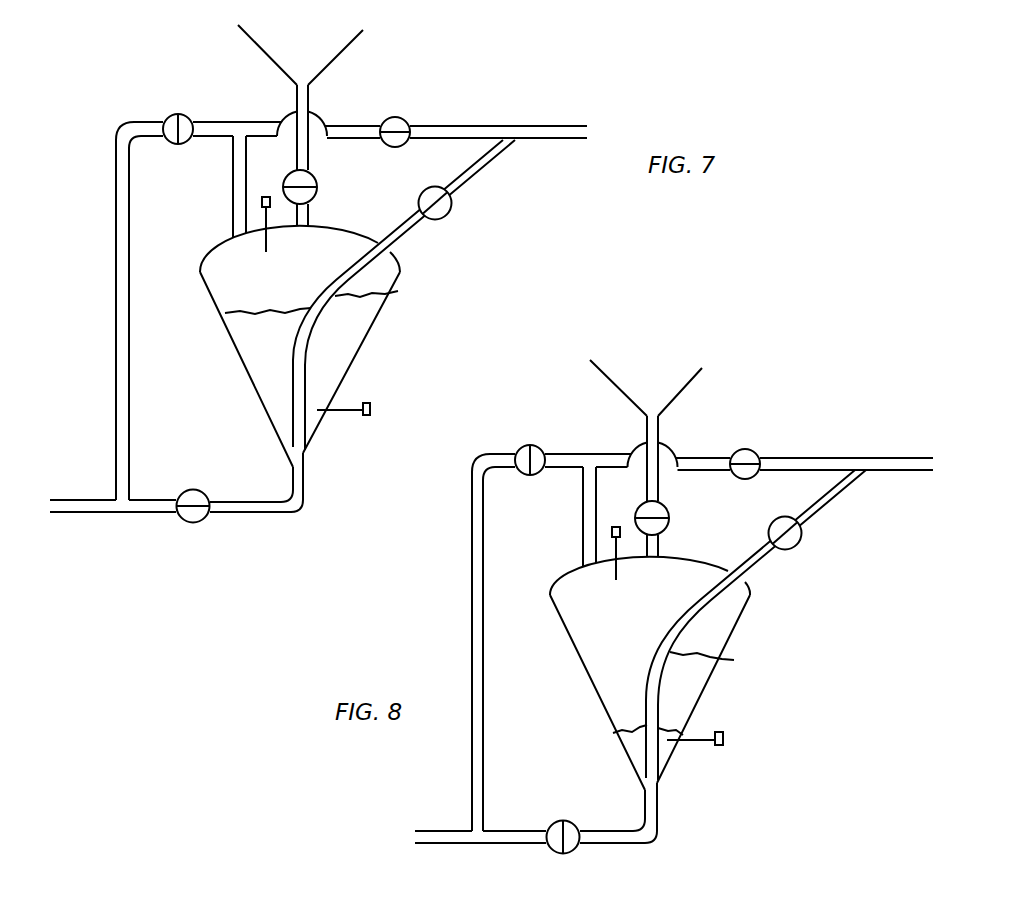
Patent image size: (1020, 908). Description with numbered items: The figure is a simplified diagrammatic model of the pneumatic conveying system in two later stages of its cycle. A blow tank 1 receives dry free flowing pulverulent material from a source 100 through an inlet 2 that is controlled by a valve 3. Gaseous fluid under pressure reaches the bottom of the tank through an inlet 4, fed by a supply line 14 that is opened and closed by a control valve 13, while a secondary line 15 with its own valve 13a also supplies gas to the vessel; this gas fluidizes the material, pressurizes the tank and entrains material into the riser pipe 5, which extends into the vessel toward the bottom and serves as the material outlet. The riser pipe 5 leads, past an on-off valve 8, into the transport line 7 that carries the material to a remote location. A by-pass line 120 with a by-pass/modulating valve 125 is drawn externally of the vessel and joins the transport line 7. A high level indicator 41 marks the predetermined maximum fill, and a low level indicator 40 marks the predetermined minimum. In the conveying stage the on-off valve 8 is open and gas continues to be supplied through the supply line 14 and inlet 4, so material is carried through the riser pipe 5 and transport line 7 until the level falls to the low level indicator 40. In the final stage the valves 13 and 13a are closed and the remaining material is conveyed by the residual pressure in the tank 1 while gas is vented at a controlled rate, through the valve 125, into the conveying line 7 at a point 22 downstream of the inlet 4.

In FIG. 7, the blow tank 1 is at (243, 364).
In FIG. 8, the blow tank 1 is at (588, 683).
In FIG. 7, the inlet 2 is at (309, 157).
In FIG. 8, the inlet 2 is at (660, 487).
In FIG. 7, the valve 3 is at (306, 203).
In FIG. 8, the valve 3 is at (661, 533).
In FIG. 7, the inlet for gaseous fluid 4 is at (305, 457).
In FIG. 8, the inlet for gaseous fluid 4 is at (660, 787).
In FIG. 7, the riser pipe 5 is at (376, 292).
In FIG. 8, the riser pipe 5 is at (711, 662).
In FIG. 7, the transport line 7 is at (575, 127).
In FIG. 8, the transport line 7 is at (905, 459).
In FIG. 7, the on-off valve 8 is at (452, 205).
In FIG. 8, the on-off valve 8 is at (798, 549).
In FIG. 7, the control valve 13 is at (194, 490).
In FIG. 8, the control valve 13 is at (558, 821).
In FIG. 7, the valve 13a is at (181, 114).
In FIG. 8, the valve 13a is at (534, 419).
In FIG. 7, the supply line 14 is at (258, 500).
In FIG. 8, the supply line 14 is at (613, 831).
In FIG. 7, the secondary line 15 is at (129, 315).
In FIG. 8, the secondary line 15 is at (483, 627).
In FIG. 7, the point 22 is at (511, 141).
In FIG. 8, the point 22 is at (863, 471).
In FIG. 7, the low level indicator 40 is at (370, 404).
In FIG. 8, the low level indicator 40 is at (723, 732).
In FIG. 7, the high level indicator 41 is at (265, 197).
In FIG. 8, the high level indicator 41 is at (616, 527).
In FIG. 7, the source 100 is at (352, 45).
In FIG. 8, the source 100 is at (698, 382).
In FIG. 7, the by-pass line 120 is at (345, 127).
In FIG. 8, the by-pass line 120 is at (695, 457).
In FIG. 7, the by-pass/modulating valve 125 is at (408, 121).
In FIG. 8, the by-pass/modulating valve 125 is at (758, 451).